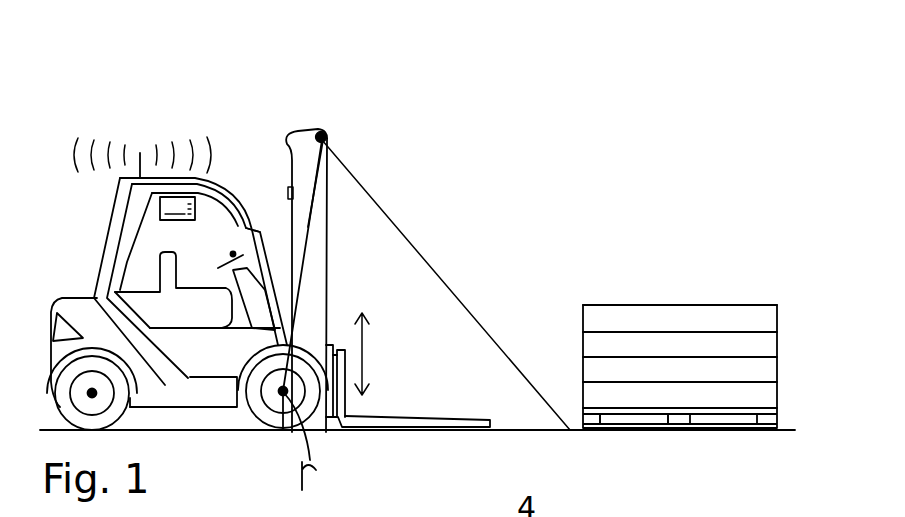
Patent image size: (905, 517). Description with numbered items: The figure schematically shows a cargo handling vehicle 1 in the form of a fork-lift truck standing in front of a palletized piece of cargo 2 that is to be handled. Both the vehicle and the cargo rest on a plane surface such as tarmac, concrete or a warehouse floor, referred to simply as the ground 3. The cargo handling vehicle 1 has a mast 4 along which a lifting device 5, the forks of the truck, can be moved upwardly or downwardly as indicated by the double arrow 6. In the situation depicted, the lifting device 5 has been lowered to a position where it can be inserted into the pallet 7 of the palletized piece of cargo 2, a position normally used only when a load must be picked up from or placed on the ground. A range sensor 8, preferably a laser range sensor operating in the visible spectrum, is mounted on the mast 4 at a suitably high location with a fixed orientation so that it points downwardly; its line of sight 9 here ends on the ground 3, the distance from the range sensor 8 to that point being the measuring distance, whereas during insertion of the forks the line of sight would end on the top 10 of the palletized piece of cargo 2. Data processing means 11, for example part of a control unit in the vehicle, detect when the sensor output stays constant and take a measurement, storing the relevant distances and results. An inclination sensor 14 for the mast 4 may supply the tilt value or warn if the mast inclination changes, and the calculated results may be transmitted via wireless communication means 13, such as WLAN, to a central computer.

The cargo handling vehicle 1 is at (211, 108).
The palletized piece of cargo 2 is at (688, 275).
The ground 3 is at (243, 431).
The mast 4 is at (300, 132).
The lifting device 5 is at (400, 422).
The double arrow 6 is at (362, 358).
The pallet 7 is at (683, 417).
The range sensor 8 is at (326, 134).
The line of sight 9 is at (310, 227).
The top 10 is at (630, 303).
The data processing means 11 is at (160, 205).
The wireless communication means 13 is at (140, 165).
The inclination sensor 14 is at (288, 193).